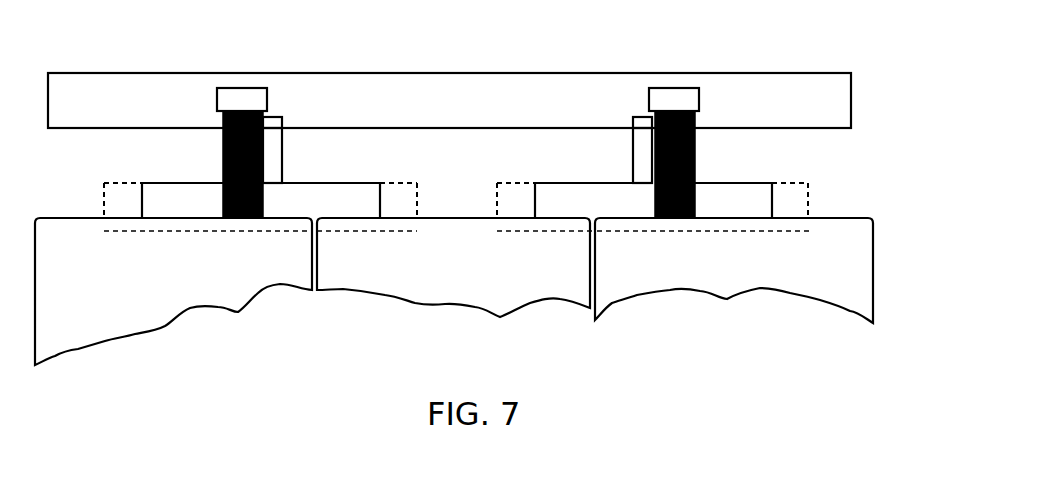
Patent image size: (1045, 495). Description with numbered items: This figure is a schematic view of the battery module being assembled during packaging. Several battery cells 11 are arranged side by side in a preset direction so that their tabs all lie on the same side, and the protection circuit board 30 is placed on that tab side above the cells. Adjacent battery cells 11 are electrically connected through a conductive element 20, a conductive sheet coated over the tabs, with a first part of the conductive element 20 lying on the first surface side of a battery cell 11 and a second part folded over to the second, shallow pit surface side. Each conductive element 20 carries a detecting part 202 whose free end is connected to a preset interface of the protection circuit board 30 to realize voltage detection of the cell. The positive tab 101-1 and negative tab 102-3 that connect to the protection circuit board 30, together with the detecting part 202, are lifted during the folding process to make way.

The protection circuit board 30 is at (852, 93).
The battery cell 11 is at (837, 265).
The conductive element 20 is at (187, 183).
The positive tab 101-1 is at (217, 110).
The negative tab 102-3 is at (695, 120).
The detecting part 202 is at (280, 140).